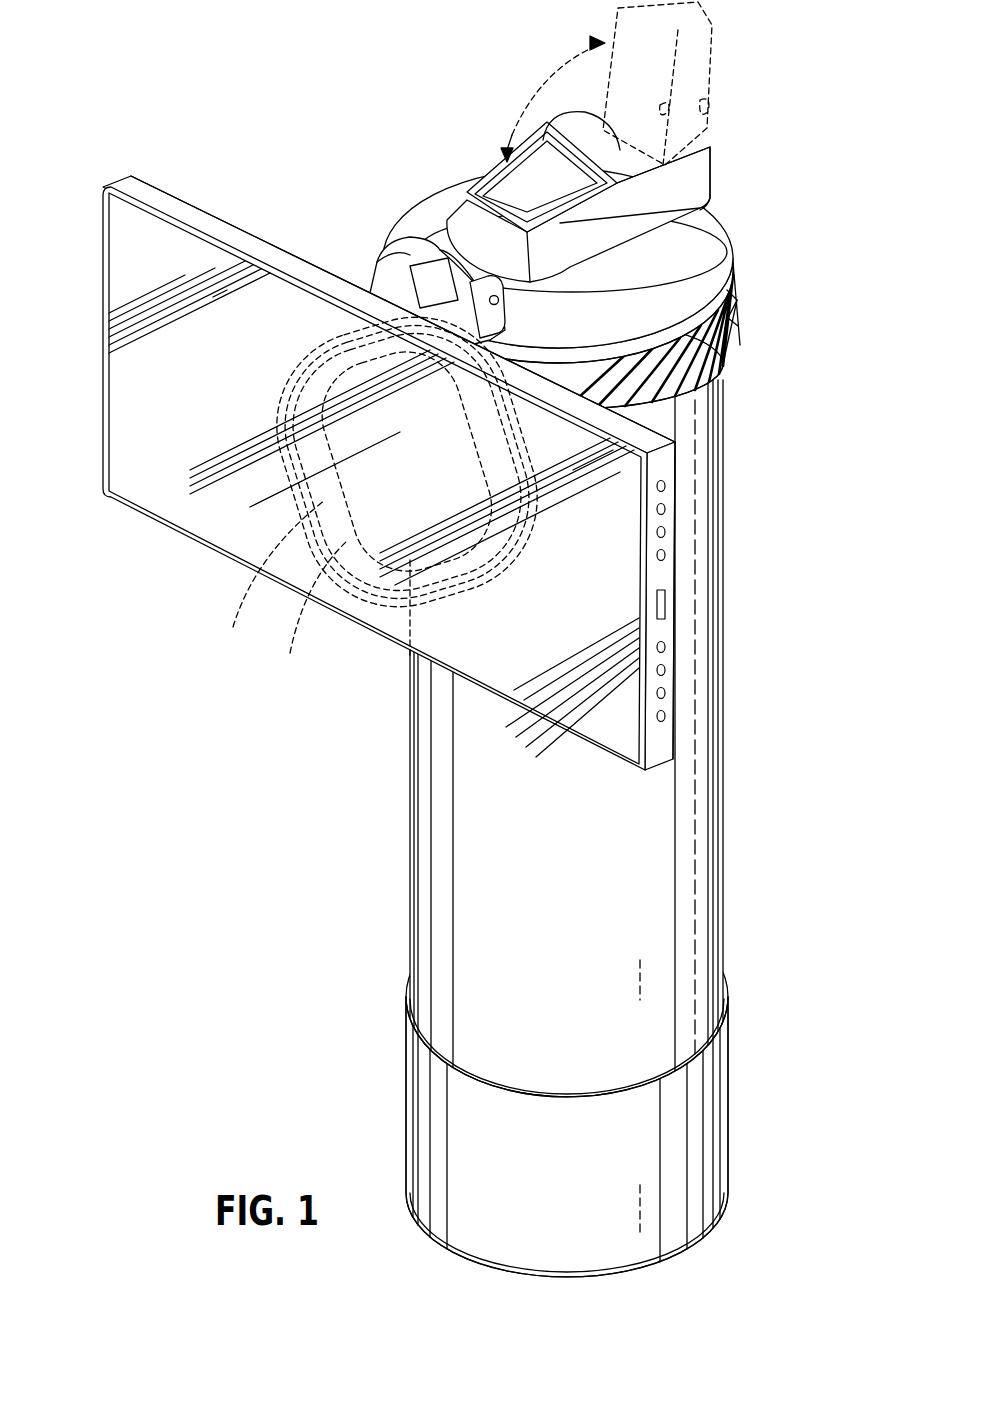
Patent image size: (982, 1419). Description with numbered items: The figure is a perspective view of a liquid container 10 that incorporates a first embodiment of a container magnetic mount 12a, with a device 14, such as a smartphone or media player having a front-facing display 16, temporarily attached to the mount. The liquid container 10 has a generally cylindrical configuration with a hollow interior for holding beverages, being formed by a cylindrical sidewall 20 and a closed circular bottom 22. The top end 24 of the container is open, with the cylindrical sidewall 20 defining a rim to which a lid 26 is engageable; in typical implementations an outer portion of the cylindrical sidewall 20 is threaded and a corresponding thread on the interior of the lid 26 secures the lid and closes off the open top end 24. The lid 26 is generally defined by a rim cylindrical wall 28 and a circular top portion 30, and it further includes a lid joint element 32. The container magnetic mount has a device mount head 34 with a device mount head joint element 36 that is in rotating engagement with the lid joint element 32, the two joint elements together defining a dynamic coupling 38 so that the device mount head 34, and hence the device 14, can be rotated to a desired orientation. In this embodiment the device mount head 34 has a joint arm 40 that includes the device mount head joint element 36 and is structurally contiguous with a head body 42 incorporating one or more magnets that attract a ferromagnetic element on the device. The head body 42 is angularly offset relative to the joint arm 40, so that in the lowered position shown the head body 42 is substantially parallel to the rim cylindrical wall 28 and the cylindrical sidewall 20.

The liquid container 10 is at (727, 1075).
The container magnetic mount 12a is at (318, 240).
The device 14 is at (364, 470).
The display 16 is at (200, 395).
The cylindrical sidewall 20 is at (541, 869).
The closed circular bottom 22 is at (578, 846).
The top end 24 is at (723, 375).
The lid 26 is at (470, 190).
The rim cylindrical wall 28 is at (600, 265).
The circular top portion 30 is at (657, 243).
The lid joint element 32 is at (447, 262).
The device mount head 34 is at (269, 579).
The device mount head joint element 36 is at (412, 250).
The dynamic coupling 38 is at (407, 224).
The joint arm 40 is at (380, 278).
The head body 42 is at (310, 612).